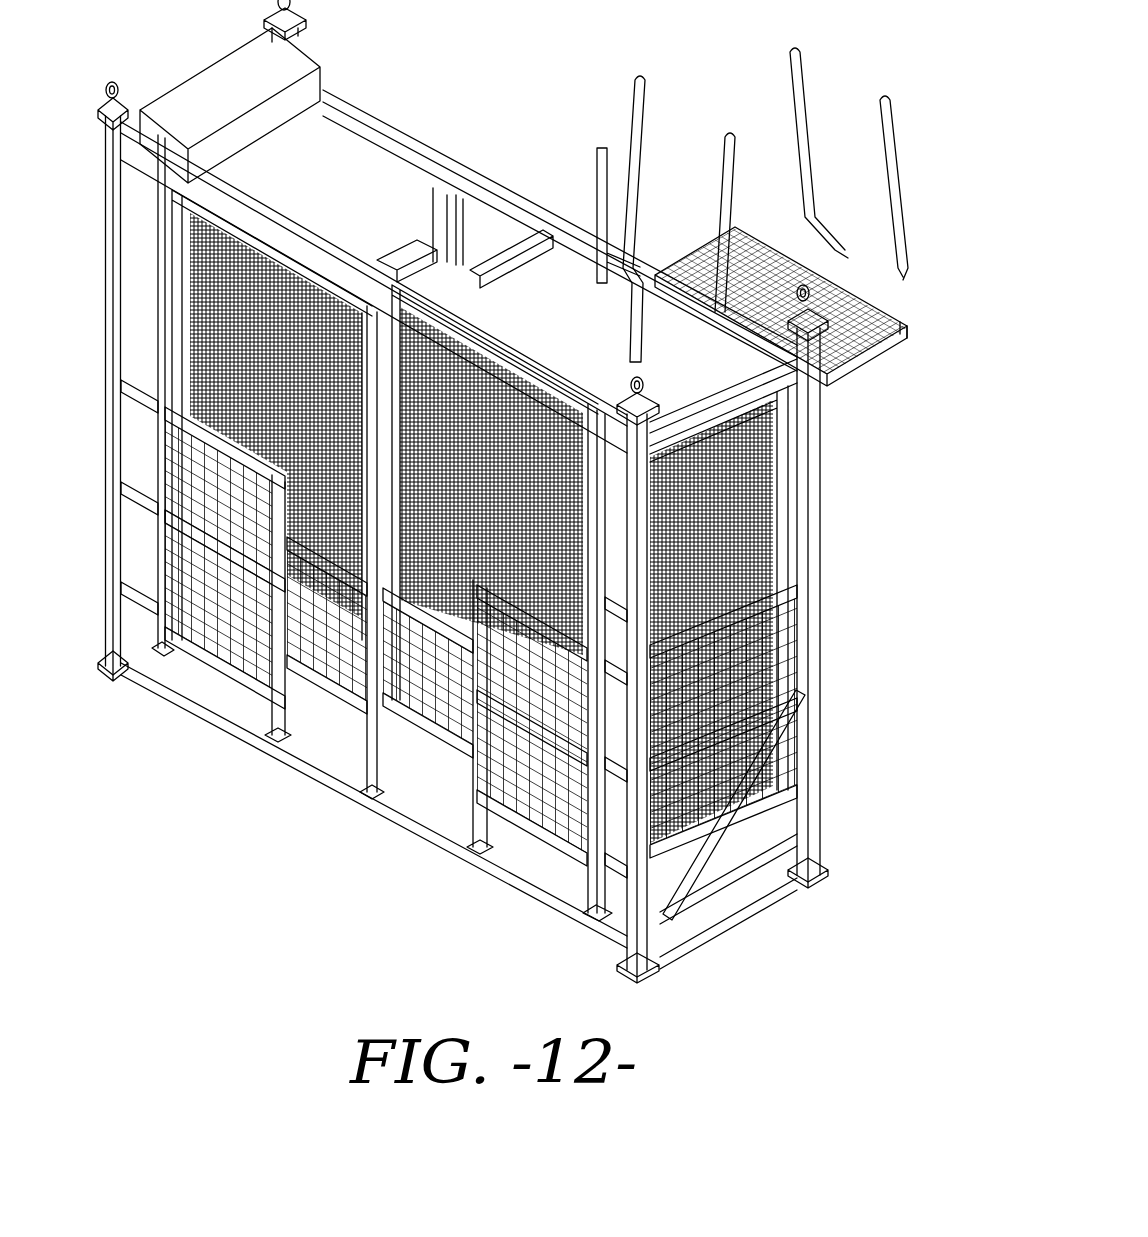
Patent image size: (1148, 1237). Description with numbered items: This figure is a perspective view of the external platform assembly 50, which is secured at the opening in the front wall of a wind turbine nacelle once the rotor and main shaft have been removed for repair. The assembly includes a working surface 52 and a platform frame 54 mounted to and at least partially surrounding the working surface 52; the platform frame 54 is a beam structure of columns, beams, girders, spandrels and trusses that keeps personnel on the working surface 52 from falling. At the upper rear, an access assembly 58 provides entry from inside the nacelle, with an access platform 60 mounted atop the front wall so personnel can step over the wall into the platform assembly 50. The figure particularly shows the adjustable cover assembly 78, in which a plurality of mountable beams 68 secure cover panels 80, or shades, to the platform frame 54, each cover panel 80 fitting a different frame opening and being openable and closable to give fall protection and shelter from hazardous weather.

The external platform assembly 50 is at (257, 830).
The working surface 52 is at (233, 678).
The platform frame 54 is at (707, 642).
The access assembly 58 is at (849, 379).
The access platform 60 is at (880, 336).
The mountable beams 68 is at (260, 163).
The adjustable cover assembly 78 is at (243, 307).
The cover panels 80 is at (240, 350).